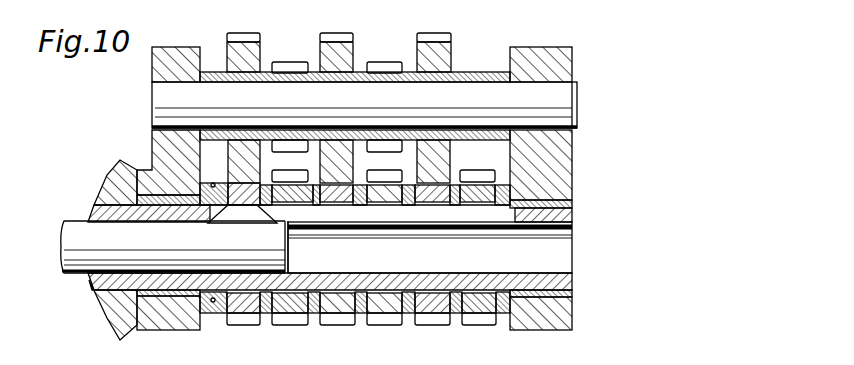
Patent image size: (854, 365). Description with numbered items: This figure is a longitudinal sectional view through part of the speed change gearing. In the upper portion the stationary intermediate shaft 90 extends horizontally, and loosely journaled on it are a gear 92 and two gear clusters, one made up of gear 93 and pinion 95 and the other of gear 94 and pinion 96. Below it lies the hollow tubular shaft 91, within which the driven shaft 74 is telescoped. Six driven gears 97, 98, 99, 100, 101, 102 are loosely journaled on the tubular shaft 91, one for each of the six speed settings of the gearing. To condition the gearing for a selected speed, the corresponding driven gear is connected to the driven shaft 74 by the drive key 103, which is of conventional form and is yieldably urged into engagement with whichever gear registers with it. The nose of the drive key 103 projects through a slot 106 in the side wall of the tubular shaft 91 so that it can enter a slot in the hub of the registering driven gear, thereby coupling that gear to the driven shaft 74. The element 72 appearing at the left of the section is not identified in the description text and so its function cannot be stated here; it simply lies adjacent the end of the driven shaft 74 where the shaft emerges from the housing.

The left housing flange 72 is at (113, 328).
The driven shaft 74 is at (64, 266).
The stationary intermediate shaft 90 is at (565, 95).
The hollow tubular shaft 91 is at (552, 276).
The gear 92 is at (237, 33).
The gear 93 is at (339, 33).
The gear 94 is at (442, 33).
The pinion 95 is at (290, 62).
The pinion 96 is at (384, 62).
The driven gear 97 is at (485, 325).
The driven gear 98 is at (438, 325).
The driven gear 99 is at (385, 325).
The driven gear 100 is at (340, 325).
The driven gear 101 is at (298, 325).
The driven gear 102 is at (251, 325).
The drive key 103 is at (258, 220).
The slot 106 is at (390, 222).